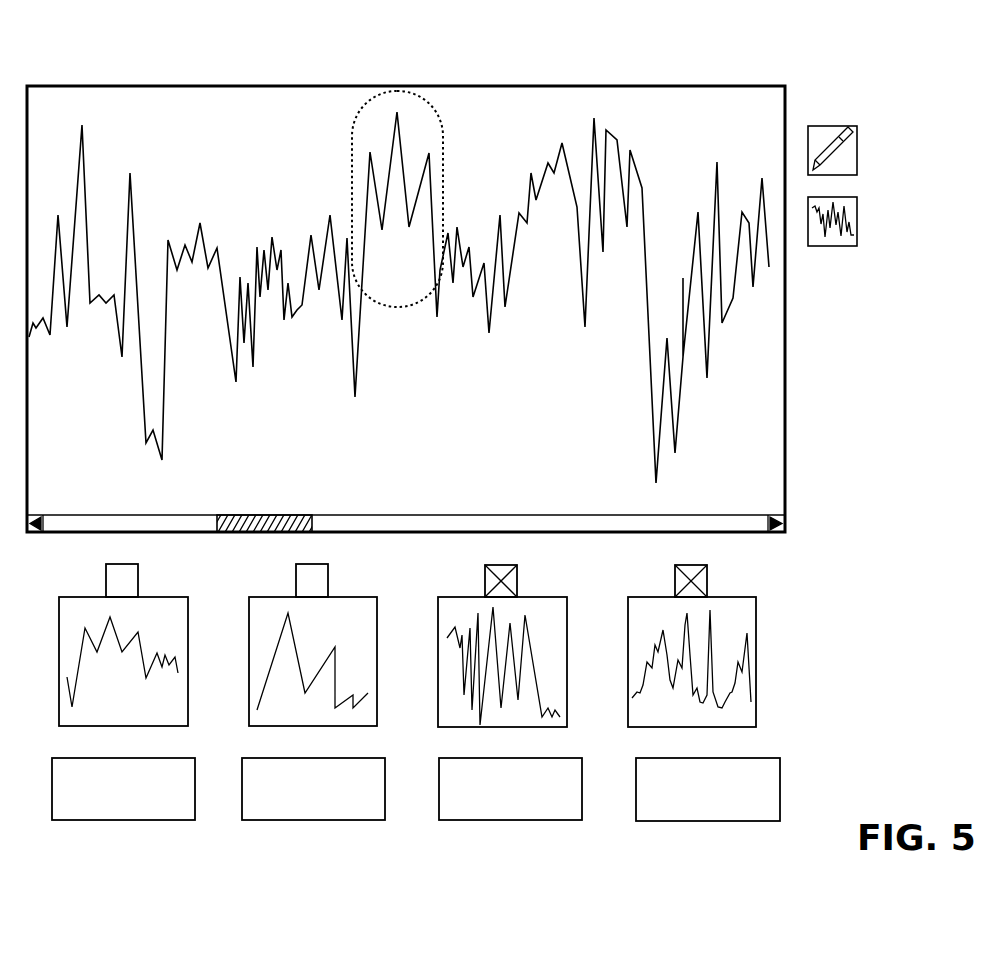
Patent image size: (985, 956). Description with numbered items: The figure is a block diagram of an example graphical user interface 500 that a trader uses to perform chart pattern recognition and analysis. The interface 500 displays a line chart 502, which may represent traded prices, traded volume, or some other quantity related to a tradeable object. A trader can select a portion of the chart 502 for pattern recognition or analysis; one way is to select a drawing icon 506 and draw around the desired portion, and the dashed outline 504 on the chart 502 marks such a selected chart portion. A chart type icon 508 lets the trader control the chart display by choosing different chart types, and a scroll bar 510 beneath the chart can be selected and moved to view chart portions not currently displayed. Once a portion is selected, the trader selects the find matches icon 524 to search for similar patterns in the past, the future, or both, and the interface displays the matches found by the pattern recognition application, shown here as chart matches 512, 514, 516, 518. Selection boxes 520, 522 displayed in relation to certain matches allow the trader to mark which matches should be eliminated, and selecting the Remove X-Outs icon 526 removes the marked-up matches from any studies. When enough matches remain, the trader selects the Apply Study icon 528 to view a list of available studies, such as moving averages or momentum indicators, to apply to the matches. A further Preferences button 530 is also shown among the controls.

The graphical user interface 500 is at (833, 82).
The line chart 502 is at (752, 129).
The selected waveform region 504 is at (443, 148).
The drawing icon 506 is at (857, 148).
The chart type icon 508 is at (857, 220).
The scroll bar 510 is at (340, 515).
The chart match 512 is at (222, 603).
The chart match 514 is at (412, 603).
The chart match 516 is at (567, 610).
The chart match 518 is at (756, 610).
The selection box 520 is at (517, 570).
The selection box 522 is at (707, 570).
The find matches icon 524 is at (232, 778).
The Remove X-Outs icon 526 is at (422, 778).
The Apply Study icon 528 is at (619, 778).
The Preferences button 530 is at (780, 785).